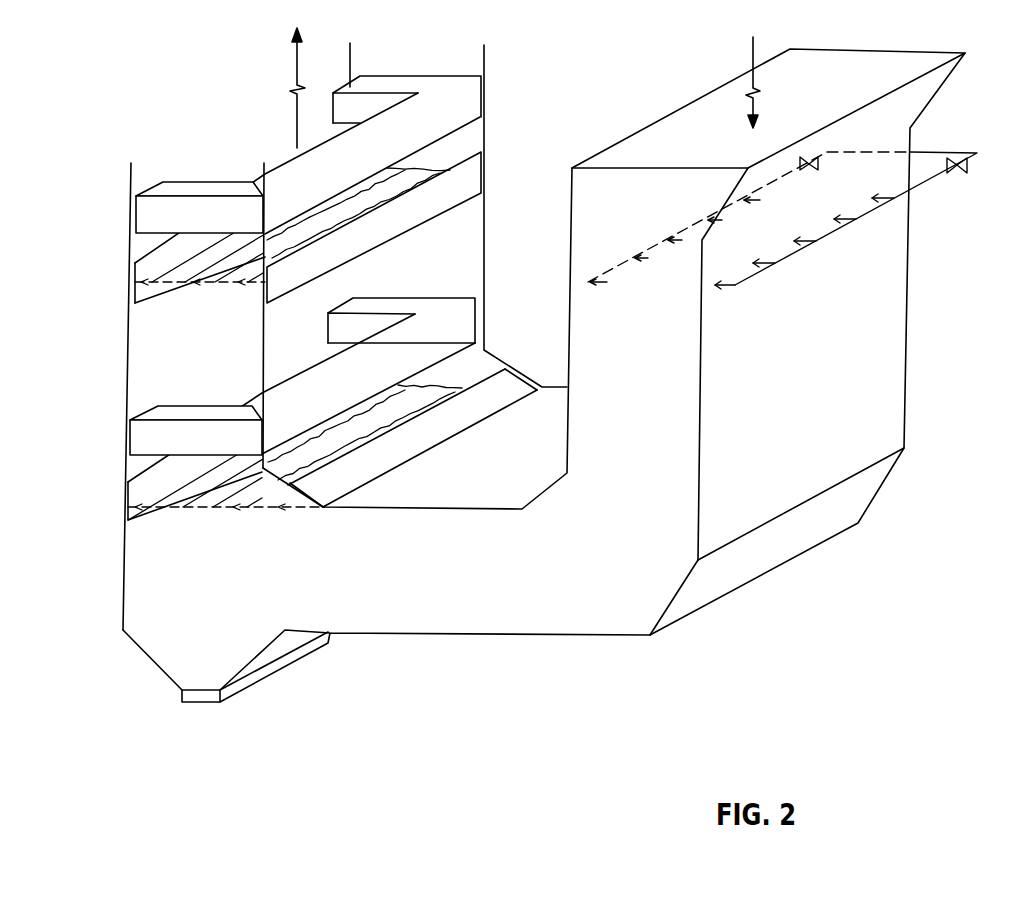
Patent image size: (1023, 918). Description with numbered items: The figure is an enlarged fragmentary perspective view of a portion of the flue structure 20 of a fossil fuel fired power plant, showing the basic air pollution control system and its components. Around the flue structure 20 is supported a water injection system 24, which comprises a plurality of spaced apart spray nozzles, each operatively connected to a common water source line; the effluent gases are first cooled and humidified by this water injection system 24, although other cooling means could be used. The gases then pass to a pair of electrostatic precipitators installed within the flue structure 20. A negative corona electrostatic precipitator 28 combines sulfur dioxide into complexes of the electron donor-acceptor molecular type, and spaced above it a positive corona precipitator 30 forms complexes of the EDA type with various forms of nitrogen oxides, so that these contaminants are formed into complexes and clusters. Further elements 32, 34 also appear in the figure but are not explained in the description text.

The flue structure 20 is at (571, 652).
The water injection system 24 is at (870, 180).
The negative corona electrostatic precipitator 28 is at (184, 491).
The positive corona precipitator 30 is at (191, 269).
The lower inlet hood 32 is at (142, 442).
The upper inlet hood 34 is at (145, 218).